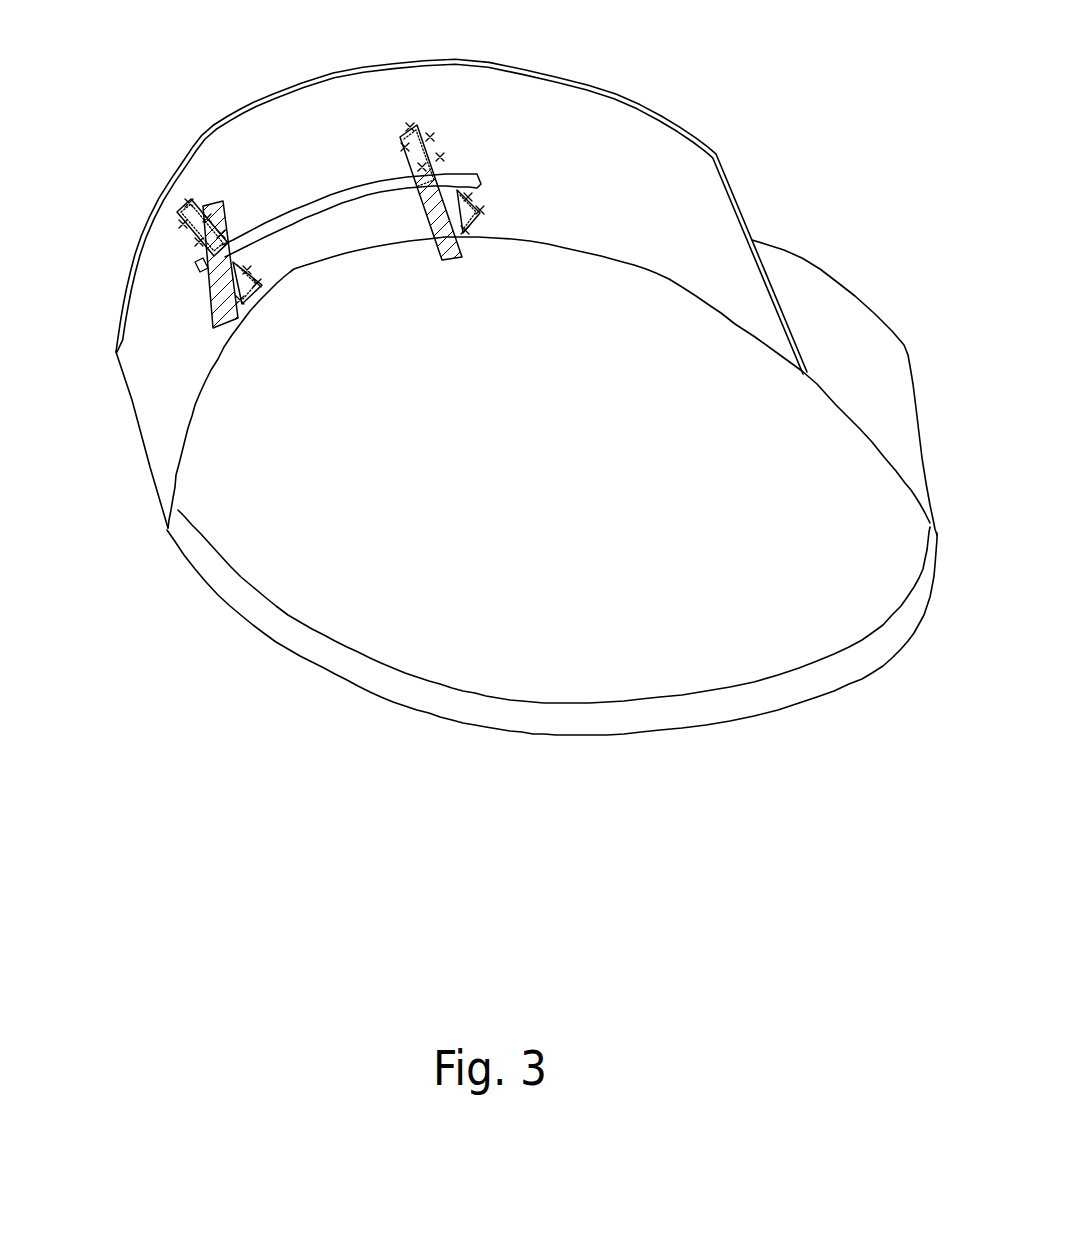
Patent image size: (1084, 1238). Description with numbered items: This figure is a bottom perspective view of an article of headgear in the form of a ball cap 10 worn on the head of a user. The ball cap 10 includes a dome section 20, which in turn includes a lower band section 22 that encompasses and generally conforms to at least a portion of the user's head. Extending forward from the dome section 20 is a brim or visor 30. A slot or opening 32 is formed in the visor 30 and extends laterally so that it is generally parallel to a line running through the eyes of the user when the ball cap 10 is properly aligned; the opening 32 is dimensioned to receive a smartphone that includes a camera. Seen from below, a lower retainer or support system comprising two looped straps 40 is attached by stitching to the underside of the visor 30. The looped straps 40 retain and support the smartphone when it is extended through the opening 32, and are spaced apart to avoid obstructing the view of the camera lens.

The ball cap 10 is at (788, 235).
The dome section 20 is at (827, 295).
The band section 22 is at (465, 715).
The visor 30 is at (147, 312).
The opening 32 is at (480, 175).
The looped straps 40 is at (450, 210).